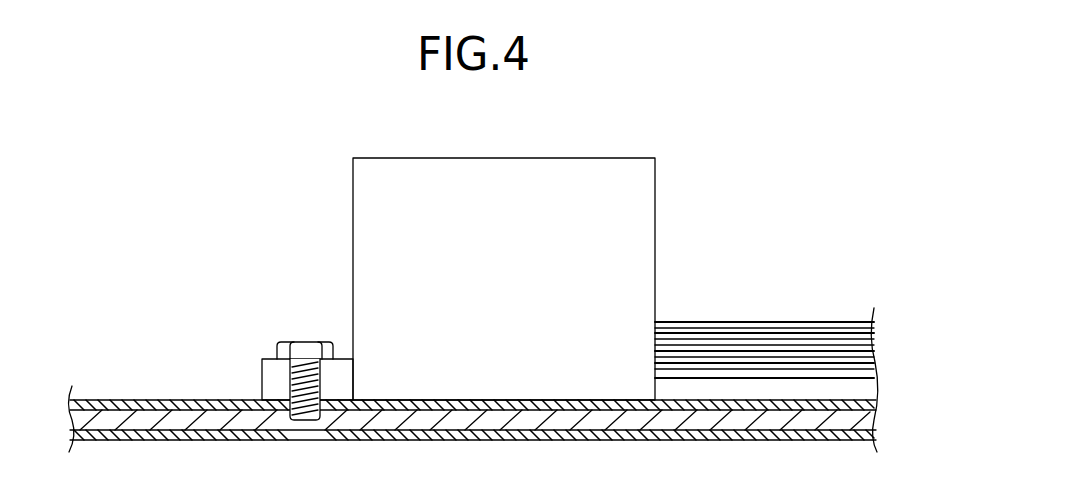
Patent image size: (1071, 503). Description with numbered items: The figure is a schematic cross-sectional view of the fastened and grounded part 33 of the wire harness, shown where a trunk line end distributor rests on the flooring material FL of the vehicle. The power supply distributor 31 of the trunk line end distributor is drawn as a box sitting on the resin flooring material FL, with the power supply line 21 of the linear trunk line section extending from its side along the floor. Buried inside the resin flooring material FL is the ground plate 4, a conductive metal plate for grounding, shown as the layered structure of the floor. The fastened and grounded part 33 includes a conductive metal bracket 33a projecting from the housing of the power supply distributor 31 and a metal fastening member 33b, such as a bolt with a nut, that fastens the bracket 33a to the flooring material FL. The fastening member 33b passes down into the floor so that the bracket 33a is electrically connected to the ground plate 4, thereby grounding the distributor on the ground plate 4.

The power supply distributor 31 is at (593, 158).
The fastened and grounded part 33 is at (277, 316).
The bracket 33a is at (262, 371).
The fastening member 33b is at (305, 336).
The ground plate 4 is at (727, 420).
The power supply line 21 is at (801, 322).
The flooring material FL is at (153, 400).